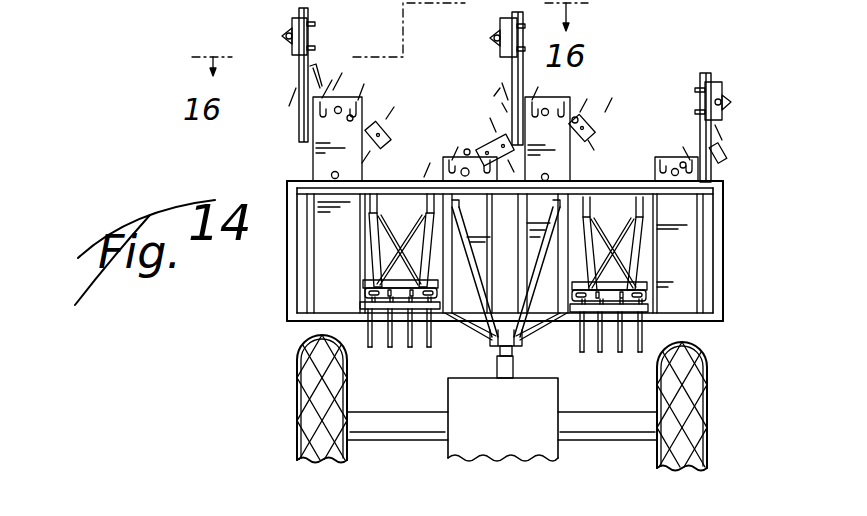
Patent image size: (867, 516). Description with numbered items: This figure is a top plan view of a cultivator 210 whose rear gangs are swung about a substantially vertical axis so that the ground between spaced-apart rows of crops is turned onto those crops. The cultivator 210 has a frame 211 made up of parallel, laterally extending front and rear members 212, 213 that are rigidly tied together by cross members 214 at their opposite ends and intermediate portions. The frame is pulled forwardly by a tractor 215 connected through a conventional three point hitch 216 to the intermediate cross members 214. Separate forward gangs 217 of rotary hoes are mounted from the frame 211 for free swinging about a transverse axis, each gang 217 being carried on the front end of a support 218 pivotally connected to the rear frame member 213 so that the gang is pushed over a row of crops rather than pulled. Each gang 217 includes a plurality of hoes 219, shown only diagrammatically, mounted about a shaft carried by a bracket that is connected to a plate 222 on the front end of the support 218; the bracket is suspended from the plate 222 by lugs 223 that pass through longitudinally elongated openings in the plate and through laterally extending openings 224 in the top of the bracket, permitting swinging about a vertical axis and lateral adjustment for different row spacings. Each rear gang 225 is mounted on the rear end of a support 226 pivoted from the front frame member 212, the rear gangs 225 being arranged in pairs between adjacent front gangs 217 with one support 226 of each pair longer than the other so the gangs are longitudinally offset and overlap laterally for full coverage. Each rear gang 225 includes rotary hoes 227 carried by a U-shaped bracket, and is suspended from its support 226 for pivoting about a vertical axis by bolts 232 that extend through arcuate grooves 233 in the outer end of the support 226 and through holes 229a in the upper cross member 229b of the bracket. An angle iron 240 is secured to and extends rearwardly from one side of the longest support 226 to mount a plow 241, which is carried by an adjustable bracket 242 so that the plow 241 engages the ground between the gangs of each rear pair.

The cultivator 210 is at (728, 272).
The frame 211 is at (287, 305).
The front frame member 212 is at (700, 322).
The rear frame member 213 is at (583, 178).
The cross members 214 is at (433, 203).
The tractor 215 is at (507, 465).
The three point hitch 216 is at (520, 330).
The gangs of rotary hoes 217 is at (610, 356).
The support 218 is at (375, 242).
The hoes 219 is at (391, 352).
The plate 222 is at (380, 298).
The lugs 223 is at (383, 280).
The laterally extending openings 224 is at (447, 290).
The rear gang 225 is at (576, 94).
The support 226 is at (287, 255).
The rotary hoes 227 is at (450, 165).
The holes 229a is at (378, 131).
The upper cross member 229b is at (503, 130).
The bolts 232 is at (363, 117).
The arcuate grooves 233 is at (352, 100).
The angle iron 240 is at (510, 58).
The plow 241 is at (303, 37).
The bracket 242 is at (722, 107).